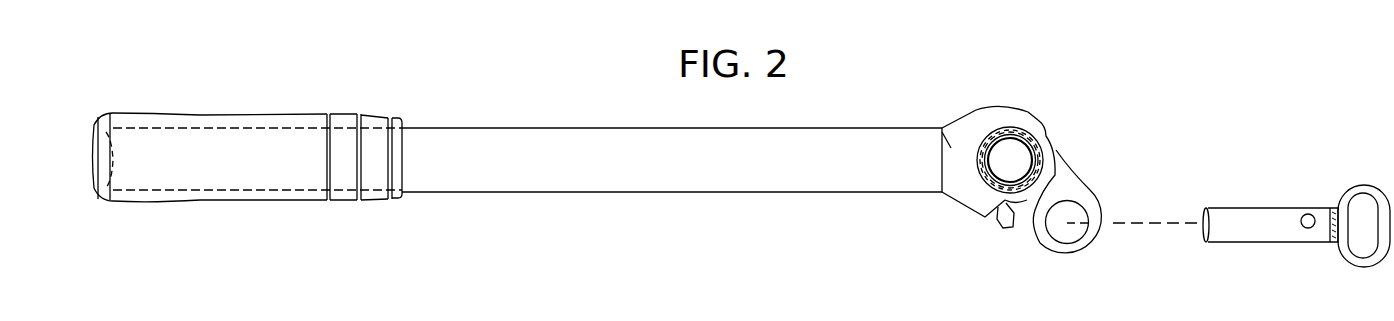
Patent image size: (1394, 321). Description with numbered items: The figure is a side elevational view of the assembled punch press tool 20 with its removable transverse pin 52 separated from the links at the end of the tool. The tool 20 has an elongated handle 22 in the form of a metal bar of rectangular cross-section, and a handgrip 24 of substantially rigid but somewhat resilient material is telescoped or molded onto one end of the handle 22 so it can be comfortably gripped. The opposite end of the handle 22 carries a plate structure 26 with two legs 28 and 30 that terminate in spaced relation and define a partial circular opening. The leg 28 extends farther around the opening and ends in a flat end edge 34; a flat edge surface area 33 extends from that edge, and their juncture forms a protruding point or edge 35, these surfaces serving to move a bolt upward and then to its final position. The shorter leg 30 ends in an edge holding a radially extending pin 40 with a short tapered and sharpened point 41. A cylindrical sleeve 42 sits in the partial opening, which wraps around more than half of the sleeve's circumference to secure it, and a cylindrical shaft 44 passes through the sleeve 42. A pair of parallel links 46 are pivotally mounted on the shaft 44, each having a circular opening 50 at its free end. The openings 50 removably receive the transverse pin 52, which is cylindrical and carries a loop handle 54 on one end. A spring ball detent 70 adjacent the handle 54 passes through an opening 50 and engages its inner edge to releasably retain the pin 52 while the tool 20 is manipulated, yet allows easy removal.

The punch press tool 20 is at (807, 120).
The elongated handle 22 is at (430, 137).
The handgrip 24 is at (222, 145).
The plate structure 26 is at (947, 145).
The leg 28 is at (977, 118).
The leg 30 is at (967, 196).
The flat edge surface area 33 is at (1036, 127).
The flat end edge 34 is at (1046, 151).
The protruding point or edge 35 is at (1048, 146).
The radially extending pin 40 is at (997, 222).
The tapered and sharpened point 41 is at (1007, 232).
The cylindrical sleeve 42 is at (1031, 111).
The cylindrical shaft 44 is at (1008, 165).
The parallel links 46 is at (1055, 183).
The circular opening 50 is at (1078, 238).
The removable transverse pin 52 is at (1258, 237).
The loop handle 54 is at (1368, 264).
The spring ball detent 70 is at (1310, 228).